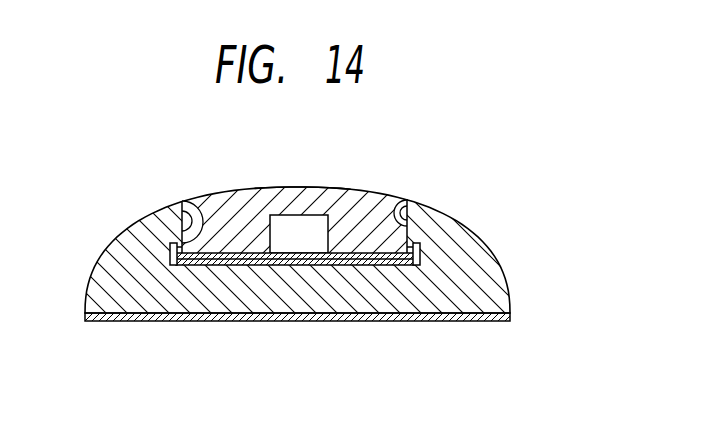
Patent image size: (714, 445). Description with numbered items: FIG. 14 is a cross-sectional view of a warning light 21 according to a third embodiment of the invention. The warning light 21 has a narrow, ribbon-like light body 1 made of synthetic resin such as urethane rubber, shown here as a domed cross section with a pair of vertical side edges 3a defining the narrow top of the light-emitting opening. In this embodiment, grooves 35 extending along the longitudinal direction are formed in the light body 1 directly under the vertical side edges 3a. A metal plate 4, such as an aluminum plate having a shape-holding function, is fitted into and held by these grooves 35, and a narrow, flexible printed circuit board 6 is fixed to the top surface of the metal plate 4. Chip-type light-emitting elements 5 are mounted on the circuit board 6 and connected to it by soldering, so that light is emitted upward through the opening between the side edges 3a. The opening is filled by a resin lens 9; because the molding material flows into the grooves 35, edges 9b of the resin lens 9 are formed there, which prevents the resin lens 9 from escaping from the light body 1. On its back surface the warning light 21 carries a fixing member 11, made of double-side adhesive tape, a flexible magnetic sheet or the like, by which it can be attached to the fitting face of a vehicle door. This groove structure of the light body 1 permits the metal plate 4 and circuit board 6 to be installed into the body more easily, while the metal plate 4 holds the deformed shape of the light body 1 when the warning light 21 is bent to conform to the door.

The light body 1 is at (477, 268).
The vertical side edges 3a is at (168, 228).
The metal plate 4 is at (207, 265).
The chip-type light-emitting elements 5 is at (295, 232).
The flexible printed circuit board 6 is at (322, 263).
The resin lens 9 is at (318, 191).
The edges of resin lens 9b is at (166, 243).
The fixing member 11 is at (452, 322).
The warning light 21 is at (393, 148).
The grooves 35 is at (195, 198).